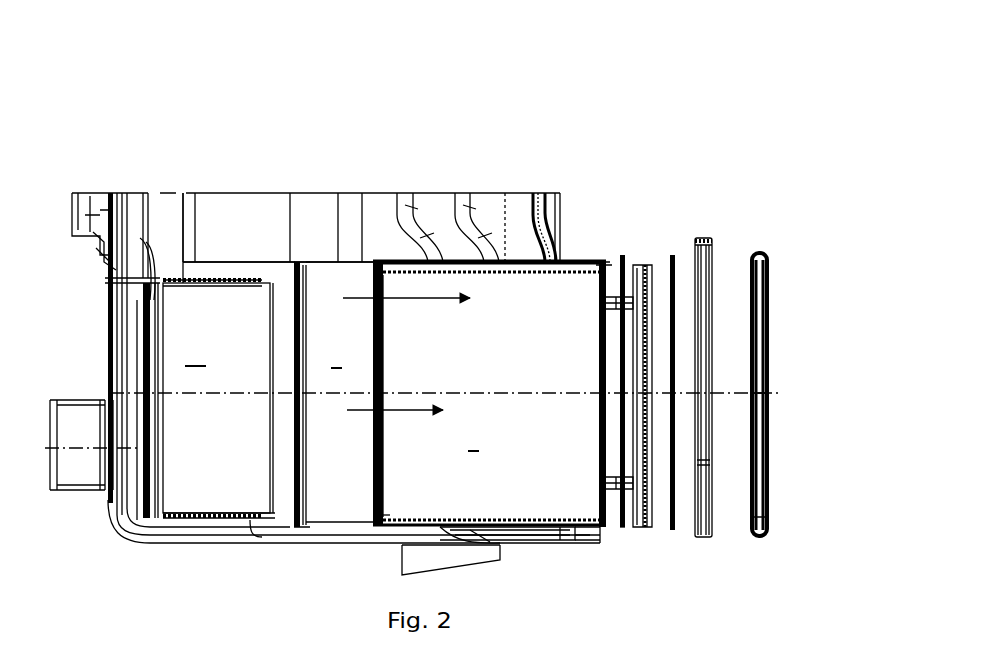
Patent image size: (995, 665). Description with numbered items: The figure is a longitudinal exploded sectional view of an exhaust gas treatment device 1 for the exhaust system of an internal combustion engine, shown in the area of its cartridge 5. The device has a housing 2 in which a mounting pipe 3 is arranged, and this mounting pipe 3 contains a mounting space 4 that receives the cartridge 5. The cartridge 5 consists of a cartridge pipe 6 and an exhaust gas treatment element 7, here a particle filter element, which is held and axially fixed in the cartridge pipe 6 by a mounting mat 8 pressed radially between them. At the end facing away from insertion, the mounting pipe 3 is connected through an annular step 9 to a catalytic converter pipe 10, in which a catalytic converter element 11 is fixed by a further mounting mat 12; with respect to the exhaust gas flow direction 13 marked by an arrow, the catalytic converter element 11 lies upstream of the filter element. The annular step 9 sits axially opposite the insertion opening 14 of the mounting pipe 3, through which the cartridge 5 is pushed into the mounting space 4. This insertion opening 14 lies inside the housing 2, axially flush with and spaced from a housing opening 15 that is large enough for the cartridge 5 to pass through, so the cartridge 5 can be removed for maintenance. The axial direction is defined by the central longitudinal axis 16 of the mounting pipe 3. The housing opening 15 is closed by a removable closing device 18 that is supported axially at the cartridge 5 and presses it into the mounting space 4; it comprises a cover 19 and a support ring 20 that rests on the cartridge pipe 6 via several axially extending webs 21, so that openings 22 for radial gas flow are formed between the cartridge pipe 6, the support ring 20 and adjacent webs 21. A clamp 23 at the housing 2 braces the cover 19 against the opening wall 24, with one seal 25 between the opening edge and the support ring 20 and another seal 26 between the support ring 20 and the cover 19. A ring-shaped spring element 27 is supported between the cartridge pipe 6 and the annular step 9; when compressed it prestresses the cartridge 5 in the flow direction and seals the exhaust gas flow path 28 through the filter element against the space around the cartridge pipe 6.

The exhaust gas treatment device 1 is at (755, 152).
The housing 2 is at (422, 190).
The mounting pipe 3 is at (325, 259).
The mounting space 4 is at (339, 392).
The cartridge 5 is at (596, 262).
The cartridge pipe 6 is at (525, 262).
The exhaust gas treatment element 7 is at (489, 393).
The mounting mat 8 is at (507, 515).
The annular step 9 is at (290, 270).
The catalytic converter pipe 10 is at (220, 280).
The catalytic converter element 11 is at (218, 398).
The mounting mat 12 is at (208, 510).
The exhaust gas flow direction 13 is at (418, 412).
The insertion opening 14 is at (490, 262).
The housing opening 15 is at (580, 545).
The central longitudinal axis 16 is at (590, 385).
The closing device 18 is at (790, 222).
The cover 19 is at (758, 255).
The support ring 20 is at (635, 265).
The webs 21 is at (607, 317).
The openings 22 is at (607, 422).
The clamp 23 is at (704, 240).
The opening wall 24 is at (567, 262).
The seal 25 is at (621, 537).
The seal 26 is at (672, 536).
The spring element 27 is at (384, 498).
The exhaust gas flow path 28 is at (428, 300).